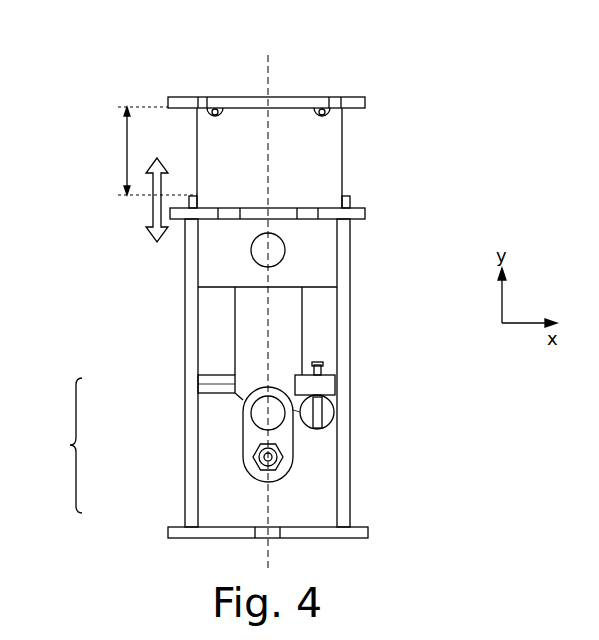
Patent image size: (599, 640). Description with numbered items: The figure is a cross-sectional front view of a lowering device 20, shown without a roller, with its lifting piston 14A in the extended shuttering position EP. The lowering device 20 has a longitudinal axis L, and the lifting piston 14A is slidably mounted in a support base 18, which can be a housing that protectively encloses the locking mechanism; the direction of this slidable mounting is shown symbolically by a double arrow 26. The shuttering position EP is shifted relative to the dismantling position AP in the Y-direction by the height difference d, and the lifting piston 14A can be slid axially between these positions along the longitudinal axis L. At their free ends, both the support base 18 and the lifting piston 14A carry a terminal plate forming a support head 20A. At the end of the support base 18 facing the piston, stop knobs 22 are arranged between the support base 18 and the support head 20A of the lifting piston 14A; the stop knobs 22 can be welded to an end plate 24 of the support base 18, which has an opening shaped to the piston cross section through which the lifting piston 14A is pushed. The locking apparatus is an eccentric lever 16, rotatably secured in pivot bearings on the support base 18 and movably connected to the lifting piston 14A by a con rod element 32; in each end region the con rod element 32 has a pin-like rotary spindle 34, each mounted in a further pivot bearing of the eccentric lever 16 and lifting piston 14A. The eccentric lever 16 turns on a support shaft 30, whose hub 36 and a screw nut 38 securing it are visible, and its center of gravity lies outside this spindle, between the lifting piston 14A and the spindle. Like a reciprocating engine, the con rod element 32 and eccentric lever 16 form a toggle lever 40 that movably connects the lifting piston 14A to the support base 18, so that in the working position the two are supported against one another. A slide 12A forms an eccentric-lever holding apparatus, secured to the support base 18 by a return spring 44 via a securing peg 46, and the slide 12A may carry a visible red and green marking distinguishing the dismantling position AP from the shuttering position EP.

The longitudinal axis L is at (268, 57).
The lowering device 20 is at (103, 91).
The support head 20A is at (366, 101).
The shuttering position EP is at (150, 107).
The height difference d is at (125, 152).
The dismantling position AP is at (172, 192).
The double arrow 26 is at (150, 207).
The lifting piston 14A is at (328, 172).
The stop knobs 22 is at (220, 117).
The end plate 24 is at (366, 212).
The support base 18 is at (186, 312).
The rotary spindle 34 is at (270, 254).
The con rod element 32 is at (253, 320).
The slide 12A is at (207, 383).
The screw nut 38 is at (293, 463).
The eccentric lever 16 is at (246, 428).
The support shaft 30 is at (246, 450).
The hub 36 is at (271, 478).
The return spring 44 is at (334, 404).
The securing peg 46 is at (318, 368).
The toggle lever 40 is at (58, 445).